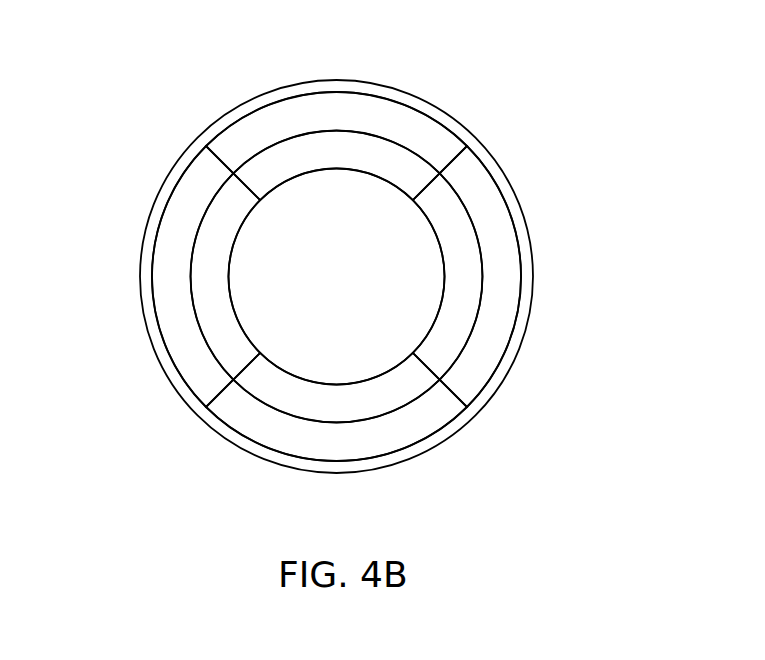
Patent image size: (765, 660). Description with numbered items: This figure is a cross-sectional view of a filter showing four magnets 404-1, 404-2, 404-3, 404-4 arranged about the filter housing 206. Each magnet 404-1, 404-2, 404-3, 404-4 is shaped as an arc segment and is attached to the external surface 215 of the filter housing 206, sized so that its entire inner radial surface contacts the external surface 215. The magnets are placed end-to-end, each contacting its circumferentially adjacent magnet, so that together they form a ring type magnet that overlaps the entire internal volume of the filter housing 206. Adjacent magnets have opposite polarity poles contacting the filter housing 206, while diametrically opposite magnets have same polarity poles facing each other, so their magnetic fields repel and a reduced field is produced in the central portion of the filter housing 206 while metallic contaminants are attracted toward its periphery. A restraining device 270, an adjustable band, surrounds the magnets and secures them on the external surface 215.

The restraining device 270 is at (440, 105).
The external surface 215 is at (440, 327).
The filter housing 206 is at (433, 222).
The magnet 404-1 is at (512, 250).
The magnet 404-2 is at (286, 113).
The magnet 404-3 is at (160, 250).
The magnet 404-4 is at (425, 425).